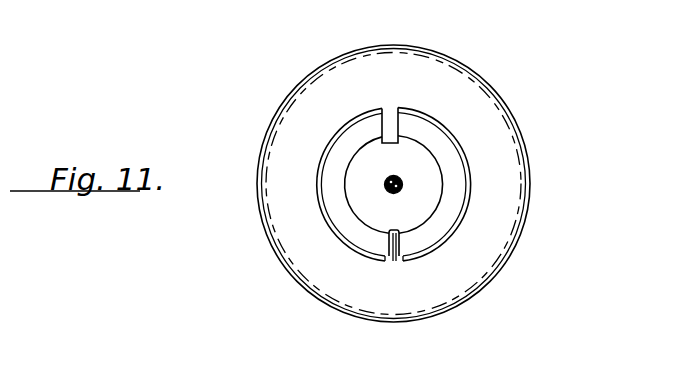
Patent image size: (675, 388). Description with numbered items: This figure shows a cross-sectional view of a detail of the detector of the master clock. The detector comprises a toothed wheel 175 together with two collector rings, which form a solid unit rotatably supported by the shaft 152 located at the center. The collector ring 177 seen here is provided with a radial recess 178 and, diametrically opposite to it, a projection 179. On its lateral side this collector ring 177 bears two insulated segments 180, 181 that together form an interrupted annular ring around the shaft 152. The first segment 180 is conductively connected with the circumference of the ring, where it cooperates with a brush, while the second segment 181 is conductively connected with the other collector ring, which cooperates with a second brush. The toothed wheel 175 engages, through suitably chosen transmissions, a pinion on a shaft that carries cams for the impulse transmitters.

The shaft 152 is at (402, 184).
The toothed wheel 175 is at (300, 113).
The collector ring 177 is at (368, 155).
The radial recess 178 is at (390, 113).
The projection 179 is at (393, 262).
The insulated segment 180 is at (350, 231).
The insulated segment 181 is at (435, 233).